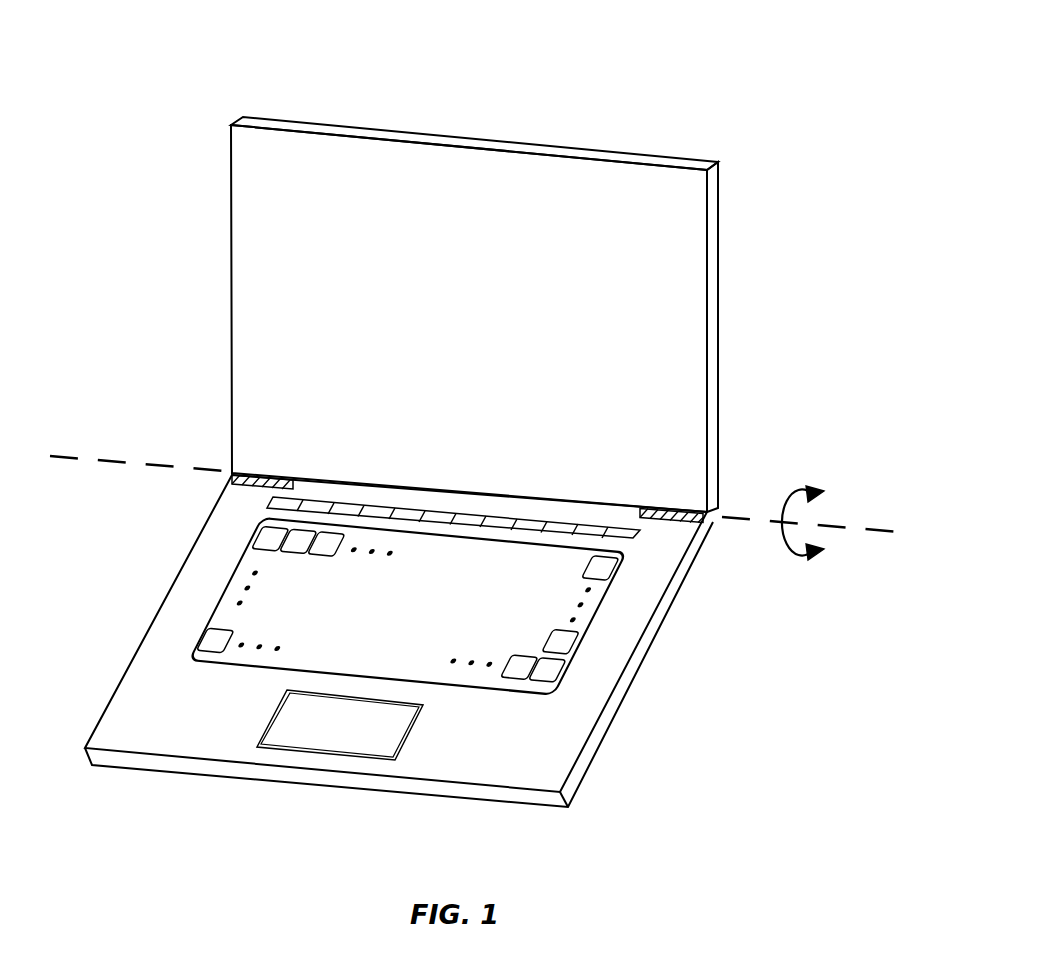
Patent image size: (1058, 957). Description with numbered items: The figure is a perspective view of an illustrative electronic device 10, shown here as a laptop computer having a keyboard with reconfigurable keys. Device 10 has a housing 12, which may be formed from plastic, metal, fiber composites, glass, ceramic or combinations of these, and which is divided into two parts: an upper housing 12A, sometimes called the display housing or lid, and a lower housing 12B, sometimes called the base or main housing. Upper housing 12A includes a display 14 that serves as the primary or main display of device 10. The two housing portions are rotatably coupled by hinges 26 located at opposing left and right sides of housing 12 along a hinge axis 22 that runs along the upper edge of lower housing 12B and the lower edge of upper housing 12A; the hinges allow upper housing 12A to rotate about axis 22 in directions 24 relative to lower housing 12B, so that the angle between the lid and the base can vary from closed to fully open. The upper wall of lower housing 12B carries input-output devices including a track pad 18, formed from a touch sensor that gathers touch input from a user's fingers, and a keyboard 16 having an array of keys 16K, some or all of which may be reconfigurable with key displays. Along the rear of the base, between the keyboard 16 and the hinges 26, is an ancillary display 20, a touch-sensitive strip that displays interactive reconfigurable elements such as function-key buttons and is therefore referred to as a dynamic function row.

The electronic device 10 is at (475, 424).
The housing 12 is at (420, 476).
The upper housing 12A is at (465, 314).
The lower housing 12B is at (397, 630).
The display 14 is at (662, 326).
The keyboard 16 is at (442, 655).
The keys 16K is at (547, 670).
The track pad 18 is at (348, 758).
The ancillary display 20 is at (640, 532).
The hinge axis 22 is at (70, 456).
The directions 24 is at (801, 558).
The hinges 26 is at (268, 476).